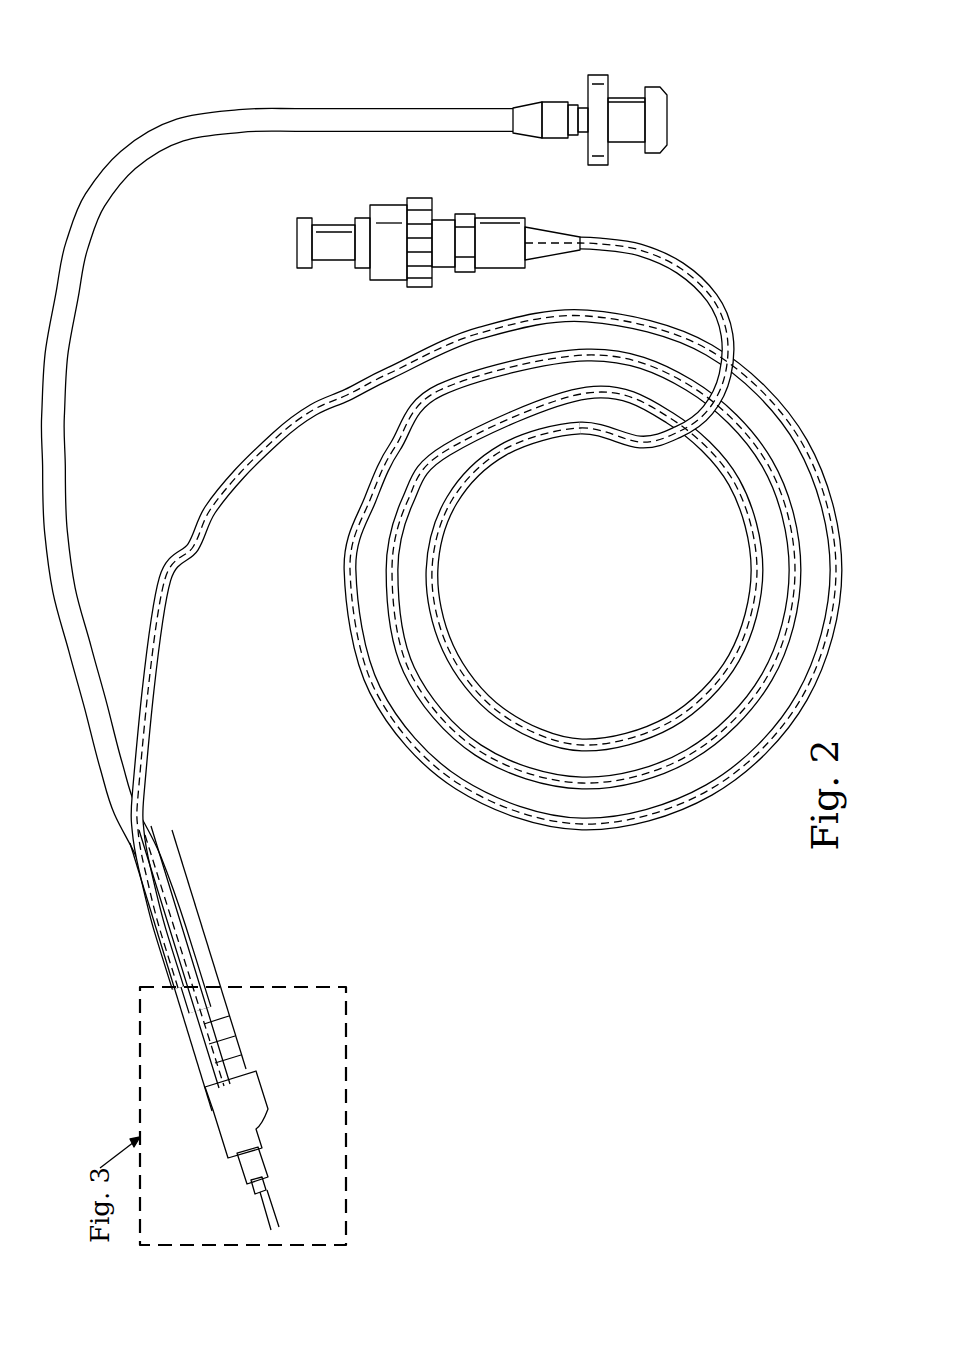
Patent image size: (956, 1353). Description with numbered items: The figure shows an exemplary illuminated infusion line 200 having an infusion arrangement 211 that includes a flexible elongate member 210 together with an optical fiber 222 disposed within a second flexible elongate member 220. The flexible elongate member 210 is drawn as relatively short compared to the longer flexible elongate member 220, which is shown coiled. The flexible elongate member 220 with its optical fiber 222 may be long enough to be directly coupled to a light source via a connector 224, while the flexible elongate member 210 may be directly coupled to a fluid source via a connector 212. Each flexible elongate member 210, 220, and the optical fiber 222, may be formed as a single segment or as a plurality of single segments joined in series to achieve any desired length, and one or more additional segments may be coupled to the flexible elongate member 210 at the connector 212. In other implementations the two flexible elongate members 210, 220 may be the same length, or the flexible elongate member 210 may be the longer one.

The illuminated infusion line 200 is at (88, 910).
The flexible elongate member 210 is at (78, 232).
The infusion arrangement 211 is at (272, 1068).
The connector 212 is at (622, 98).
The flexible elongate member 220 is at (479, 615).
The optical fiber 222 is at (150, 691).
The connector 224 is at (388, 205).